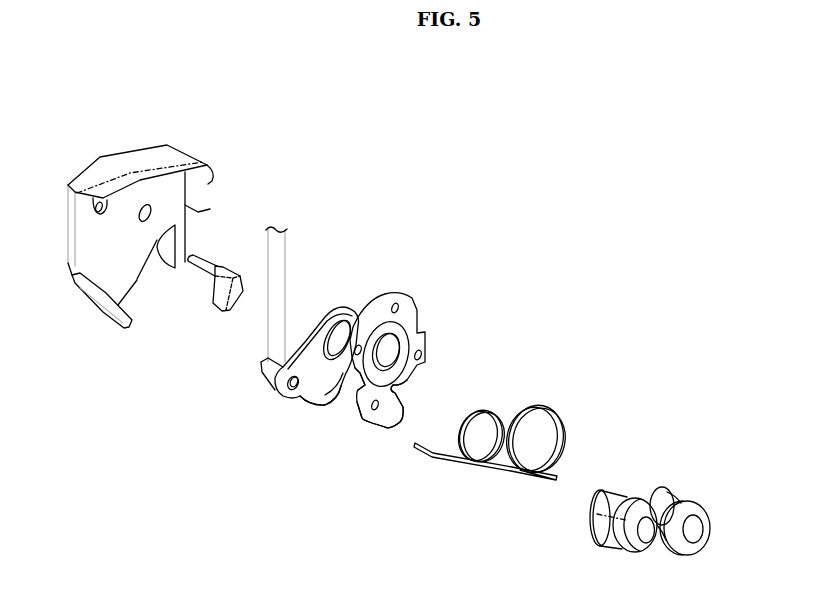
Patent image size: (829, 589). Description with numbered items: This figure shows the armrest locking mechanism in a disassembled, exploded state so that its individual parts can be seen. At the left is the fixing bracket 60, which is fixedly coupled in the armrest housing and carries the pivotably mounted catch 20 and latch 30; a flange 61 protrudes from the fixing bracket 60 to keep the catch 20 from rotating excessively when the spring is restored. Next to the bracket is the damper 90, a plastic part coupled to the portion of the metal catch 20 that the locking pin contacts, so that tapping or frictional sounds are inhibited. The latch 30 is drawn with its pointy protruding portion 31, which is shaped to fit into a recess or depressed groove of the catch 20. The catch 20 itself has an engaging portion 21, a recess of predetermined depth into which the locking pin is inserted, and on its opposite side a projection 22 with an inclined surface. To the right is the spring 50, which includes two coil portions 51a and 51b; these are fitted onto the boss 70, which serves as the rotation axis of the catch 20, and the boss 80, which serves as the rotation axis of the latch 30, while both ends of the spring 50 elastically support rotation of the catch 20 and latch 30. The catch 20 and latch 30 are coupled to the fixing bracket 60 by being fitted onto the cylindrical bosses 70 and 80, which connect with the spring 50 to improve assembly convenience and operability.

The catch 20 is at (412, 315).
The engaging portion 21 is at (393, 387).
The projection 22 is at (355, 390).
The latch 30 is at (305, 394).
The protruding portion 31 is at (342, 392).
The spring 50 is at (492, 439).
The coil portion 51a is at (488, 411).
The coil portion 51b is at (547, 406).
The fixing bracket 60 is at (128, 275).
The flange 61 is at (182, 155).
The boss 70 is at (672, 500).
The boss 80 is at (608, 496).
The damper 90 is at (233, 298).